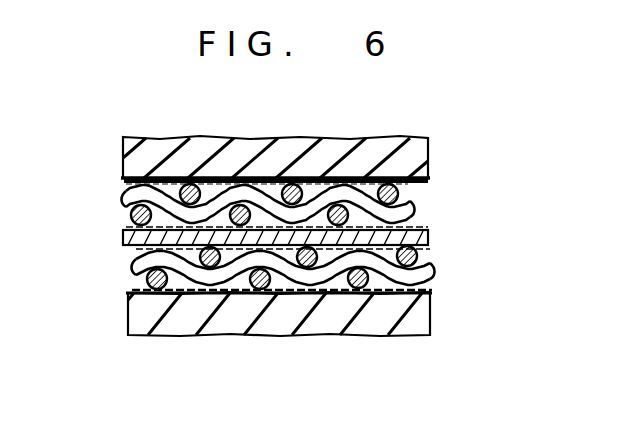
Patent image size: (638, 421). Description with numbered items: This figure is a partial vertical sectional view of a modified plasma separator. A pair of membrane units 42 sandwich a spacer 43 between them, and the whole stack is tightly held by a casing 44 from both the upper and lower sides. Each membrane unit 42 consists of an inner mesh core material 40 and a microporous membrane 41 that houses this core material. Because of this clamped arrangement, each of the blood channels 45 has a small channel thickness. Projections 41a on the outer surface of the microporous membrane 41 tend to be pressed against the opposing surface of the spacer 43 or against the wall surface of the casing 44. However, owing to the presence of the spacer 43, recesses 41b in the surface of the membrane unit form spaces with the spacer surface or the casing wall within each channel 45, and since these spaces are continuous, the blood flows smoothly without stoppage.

The mesh core material 40 is at (368, 293).
The microporous membrane 41 is at (263, 220).
The projections 41a is at (278, 292).
The recesses 41b is at (188, 296).
The membrane unit 42 is at (117, 219).
The spacer 43 is at (412, 226).
The casing 44 is at (417, 150).
The blood channel 45 is at (322, 214).